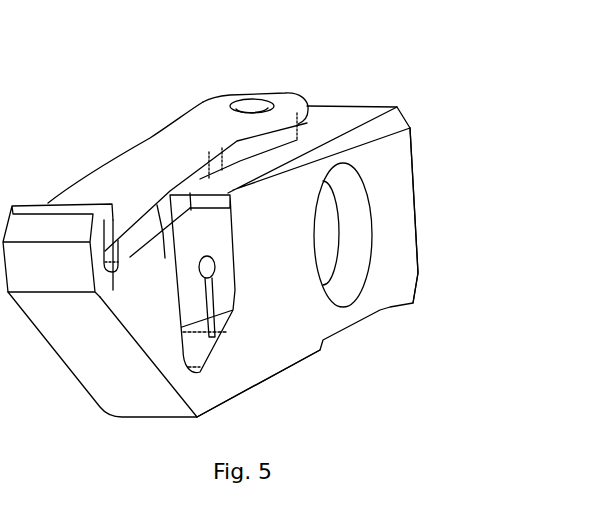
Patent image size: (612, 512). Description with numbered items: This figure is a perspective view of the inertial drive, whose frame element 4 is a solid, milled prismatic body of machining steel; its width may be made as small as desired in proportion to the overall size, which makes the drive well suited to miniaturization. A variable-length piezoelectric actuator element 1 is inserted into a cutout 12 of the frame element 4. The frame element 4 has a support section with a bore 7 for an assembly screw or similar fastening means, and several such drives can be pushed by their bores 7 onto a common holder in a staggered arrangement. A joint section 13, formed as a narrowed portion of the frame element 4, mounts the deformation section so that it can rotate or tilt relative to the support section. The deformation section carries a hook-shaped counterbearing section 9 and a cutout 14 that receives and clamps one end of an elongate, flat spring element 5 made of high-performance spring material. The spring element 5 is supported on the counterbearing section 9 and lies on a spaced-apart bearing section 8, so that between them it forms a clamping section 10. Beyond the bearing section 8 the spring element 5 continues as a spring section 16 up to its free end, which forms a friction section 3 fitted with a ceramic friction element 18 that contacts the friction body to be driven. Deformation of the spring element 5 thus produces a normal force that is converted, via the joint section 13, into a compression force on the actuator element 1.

The piezoelectric actuator element 1 is at (217, 237).
The friction section 3 is at (283, 102).
The frame element 4 is at (393, 213).
The spring element 5 is at (185, 132).
The bore 7 is at (345, 278).
The bearing section 8 is at (160, 262).
The counterbearing section 9 is at (40, 207).
The clamping section 10 is at (157, 205).
The cutout 12 is at (220, 317).
The joint section 13 is at (197, 388).
The cutout 14 is at (117, 273).
The spring section 16 is at (410, 128).
The friction element 18 is at (249, 107).